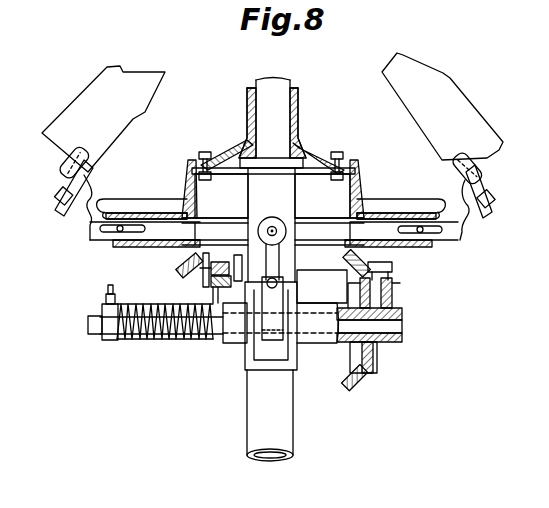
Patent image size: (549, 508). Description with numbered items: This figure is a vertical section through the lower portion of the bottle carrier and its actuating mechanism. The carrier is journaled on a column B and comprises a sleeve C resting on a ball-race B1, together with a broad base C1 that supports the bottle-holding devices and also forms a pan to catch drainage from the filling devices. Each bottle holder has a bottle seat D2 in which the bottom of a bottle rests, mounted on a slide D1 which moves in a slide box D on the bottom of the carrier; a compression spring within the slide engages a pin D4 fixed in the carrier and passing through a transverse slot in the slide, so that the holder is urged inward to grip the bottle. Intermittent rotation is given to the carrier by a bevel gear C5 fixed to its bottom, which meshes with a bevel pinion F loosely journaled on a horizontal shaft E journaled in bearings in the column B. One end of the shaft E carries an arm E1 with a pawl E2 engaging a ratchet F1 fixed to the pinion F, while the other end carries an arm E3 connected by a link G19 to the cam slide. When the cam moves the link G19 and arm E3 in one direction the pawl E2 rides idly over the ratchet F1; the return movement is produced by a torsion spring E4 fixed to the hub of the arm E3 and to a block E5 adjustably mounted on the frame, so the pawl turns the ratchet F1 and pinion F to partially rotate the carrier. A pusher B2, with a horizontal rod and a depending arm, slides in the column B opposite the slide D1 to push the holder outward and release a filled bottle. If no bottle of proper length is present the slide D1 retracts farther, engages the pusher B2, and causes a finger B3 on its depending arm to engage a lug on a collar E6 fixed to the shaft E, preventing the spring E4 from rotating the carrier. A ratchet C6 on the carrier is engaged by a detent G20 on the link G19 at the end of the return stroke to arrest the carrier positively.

The sleeve C is at (298, 110).
The ball-race B1 is at (305, 153).
The pusher B2 is at (272, 231).
The finger B3 is at (268, 300).
The column B is at (293, 416).
The broad base C1 is at (135, 205).
The bevel gear C5 is at (182, 269).
The ratchet C6 is at (338, 268).
The slide box D is at (118, 242).
The slide D1 is at (85, 232).
The bottle seat D2 is at (92, 168).
The pin D4 is at (118, 233).
The horizontal shaft E is at (402, 326).
The arm E1 is at (392, 292).
The pawl E2 is at (388, 252).
The arm E3 is at (223, 300).
The torsion spring E4 is at (172, 340).
The block E5 is at (120, 342).
The collar E6 is at (270, 335).
The bevel pinion F is at (362, 380).
The ratchet F1 is at (377, 362).
The link G19 is at (229, 289).
The detent G20 is at (221, 262).